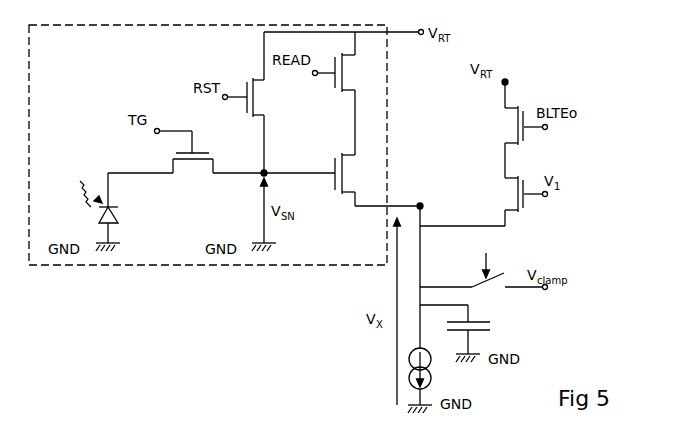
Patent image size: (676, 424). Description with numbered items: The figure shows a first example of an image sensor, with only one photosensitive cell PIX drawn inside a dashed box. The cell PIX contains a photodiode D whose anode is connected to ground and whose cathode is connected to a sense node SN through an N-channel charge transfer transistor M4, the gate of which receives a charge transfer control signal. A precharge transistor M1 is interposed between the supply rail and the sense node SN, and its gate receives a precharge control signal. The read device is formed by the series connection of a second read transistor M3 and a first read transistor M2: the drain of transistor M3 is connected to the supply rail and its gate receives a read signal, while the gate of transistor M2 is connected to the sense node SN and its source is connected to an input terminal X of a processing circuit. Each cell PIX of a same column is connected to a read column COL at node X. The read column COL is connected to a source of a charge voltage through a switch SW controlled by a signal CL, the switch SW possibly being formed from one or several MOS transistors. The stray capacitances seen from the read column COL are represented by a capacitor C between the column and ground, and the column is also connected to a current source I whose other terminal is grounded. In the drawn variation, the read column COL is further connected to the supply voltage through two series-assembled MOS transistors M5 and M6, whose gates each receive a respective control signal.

The photosensitive cell PIX is at (148, 265).
The precharge transistor M1 is at (251, 102).
The first read transistor M2 is at (342, 179).
The second read transistor M3 is at (341, 93).
The charge transfer transistor M4 is at (186, 158).
The transistor M5 is at (518, 184).
The transistor M6 is at (518, 112).
The photodiode D is at (110, 208).
The sense node SN is at (264, 173).
The input terminal X is at (418, 267).
The read column COL is at (423, 211).
The switch SW is at (484, 290).
The control signal CL is at (487, 257).
The capacitor C is at (463, 329).
The current source I is at (424, 376).